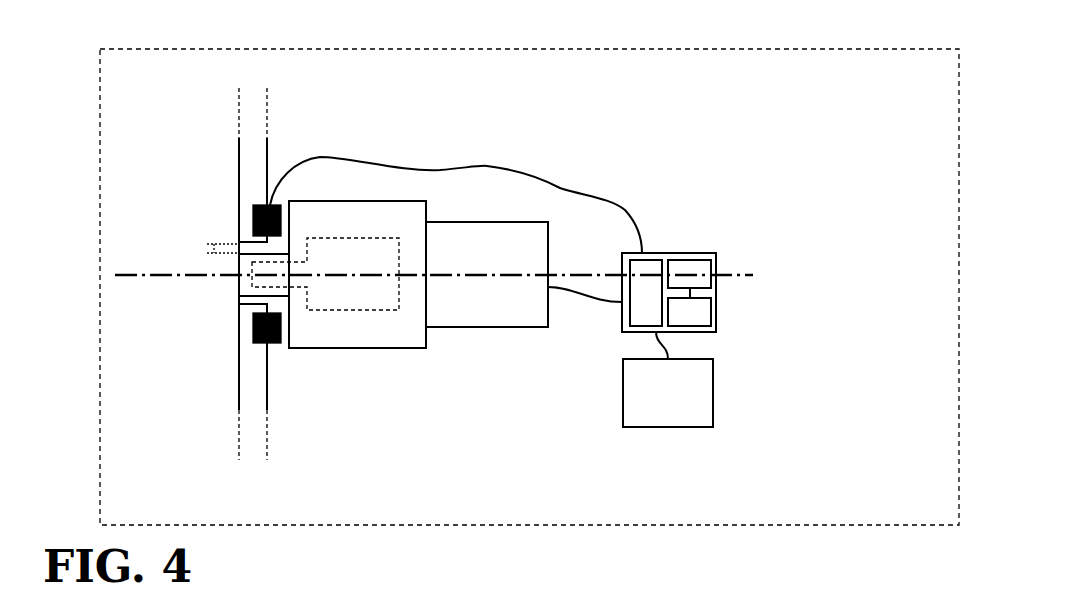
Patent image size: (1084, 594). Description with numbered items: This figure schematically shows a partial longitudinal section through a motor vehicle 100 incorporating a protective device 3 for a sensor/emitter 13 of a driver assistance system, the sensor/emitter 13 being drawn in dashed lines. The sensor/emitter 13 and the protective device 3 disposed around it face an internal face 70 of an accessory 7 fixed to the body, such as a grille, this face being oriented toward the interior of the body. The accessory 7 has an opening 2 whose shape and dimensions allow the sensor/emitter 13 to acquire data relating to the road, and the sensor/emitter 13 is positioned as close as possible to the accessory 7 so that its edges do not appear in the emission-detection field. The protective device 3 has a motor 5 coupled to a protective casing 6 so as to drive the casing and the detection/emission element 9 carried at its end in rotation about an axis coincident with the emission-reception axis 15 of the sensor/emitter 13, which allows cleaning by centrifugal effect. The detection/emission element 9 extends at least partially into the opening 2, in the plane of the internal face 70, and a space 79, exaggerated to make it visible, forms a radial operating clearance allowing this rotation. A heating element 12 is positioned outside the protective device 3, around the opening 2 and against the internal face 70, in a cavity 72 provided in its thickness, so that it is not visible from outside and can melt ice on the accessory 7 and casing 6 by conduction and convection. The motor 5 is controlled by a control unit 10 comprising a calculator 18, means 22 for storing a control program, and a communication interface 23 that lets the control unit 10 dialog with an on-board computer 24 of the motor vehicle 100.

The motor vehicle 100 is at (99, 130).
The opening 2 is at (237, 299).
The protective device 3 is at (453, 136).
The motor 5 is at (477, 263).
The protective casing 6 is at (401, 339).
The accessory fixed to the body 7 is at (256, 148).
The detection/emission element 9 is at (239, 284).
The control unit 10 is at (703, 253).
The heating element 12 is at (268, 205).
The sensor/emitter 13 is at (357, 312).
The emission-reception axis 15 is at (137, 270).
The calculator 18 is at (680, 281).
The means for storing 22 is at (679, 322).
The communication interface 23 is at (636, 307).
The on-board computer 24 is at (658, 401).
The internal face 70 is at (268, 382).
The cavity 72 is at (252, 211).
The space 79 is at (205, 248).